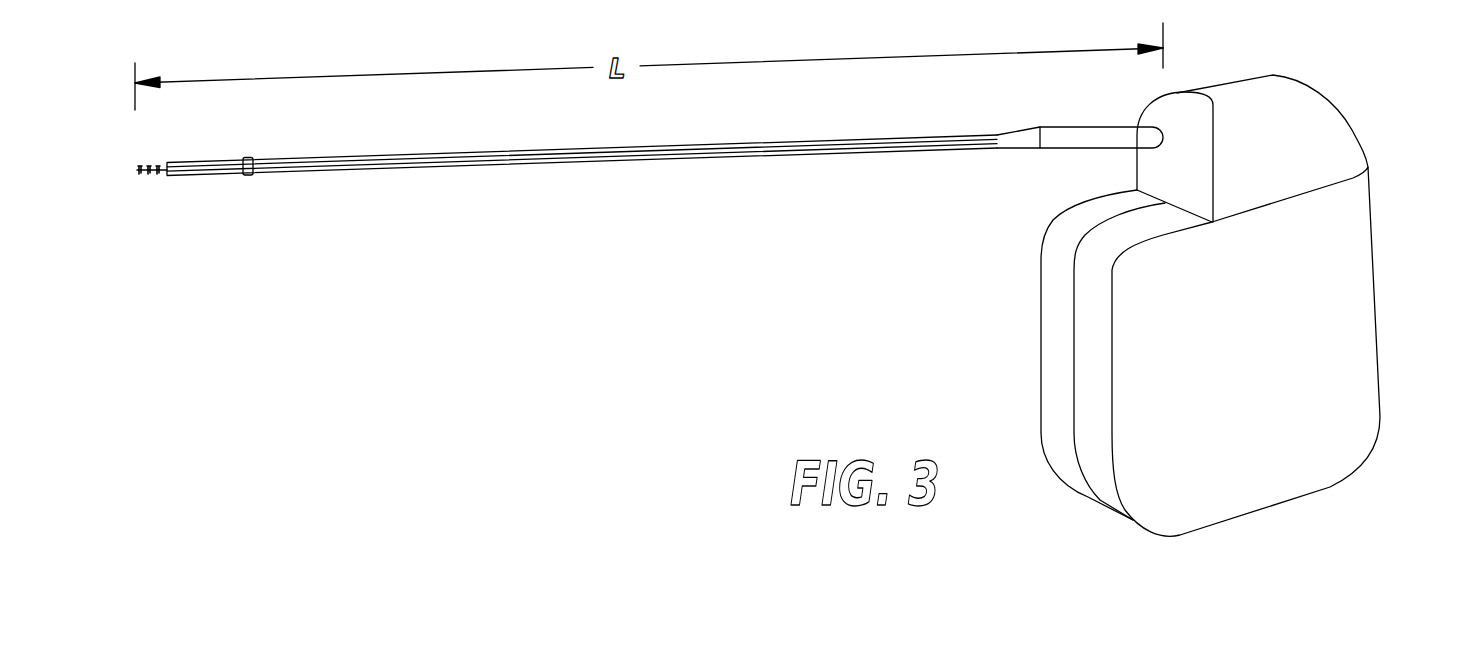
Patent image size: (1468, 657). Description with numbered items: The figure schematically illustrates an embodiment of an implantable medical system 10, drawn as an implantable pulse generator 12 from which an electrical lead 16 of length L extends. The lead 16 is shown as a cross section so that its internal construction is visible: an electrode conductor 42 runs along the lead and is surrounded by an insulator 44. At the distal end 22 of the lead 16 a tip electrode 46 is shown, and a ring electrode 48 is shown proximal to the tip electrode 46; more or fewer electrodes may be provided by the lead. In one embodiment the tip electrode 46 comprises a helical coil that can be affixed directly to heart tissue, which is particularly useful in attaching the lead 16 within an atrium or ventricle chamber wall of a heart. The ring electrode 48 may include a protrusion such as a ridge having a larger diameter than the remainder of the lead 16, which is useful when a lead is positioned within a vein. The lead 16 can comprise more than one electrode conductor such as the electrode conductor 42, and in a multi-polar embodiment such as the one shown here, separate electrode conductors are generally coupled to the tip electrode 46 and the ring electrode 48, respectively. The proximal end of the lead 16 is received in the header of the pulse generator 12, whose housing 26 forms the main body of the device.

The implantable medical system 10 is at (907, 275).
The implantable pulse generator 12 is at (1385, 330).
The electrical lead 16 is at (932, 150).
The distal end 22 is at (175, 177).
The housing of pulse generator 26 is at (1242, 485).
The electrode conductor 42 is at (552, 162).
The insulator 44 is at (642, 158).
The tip electrode 46 is at (143, 177).
The ring electrode 48 is at (243, 177).